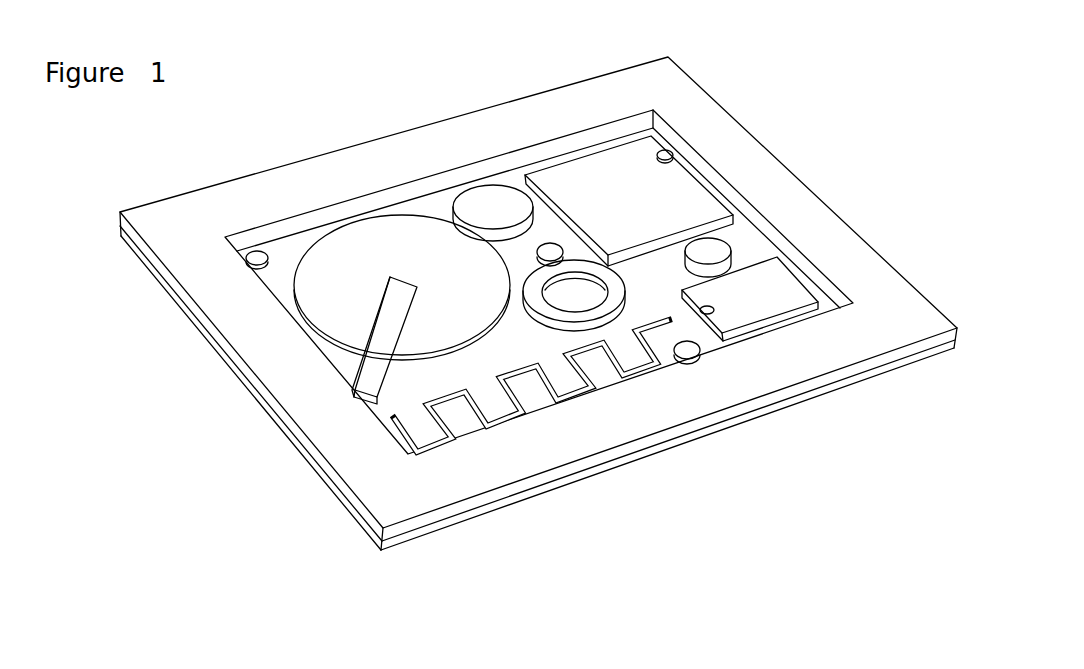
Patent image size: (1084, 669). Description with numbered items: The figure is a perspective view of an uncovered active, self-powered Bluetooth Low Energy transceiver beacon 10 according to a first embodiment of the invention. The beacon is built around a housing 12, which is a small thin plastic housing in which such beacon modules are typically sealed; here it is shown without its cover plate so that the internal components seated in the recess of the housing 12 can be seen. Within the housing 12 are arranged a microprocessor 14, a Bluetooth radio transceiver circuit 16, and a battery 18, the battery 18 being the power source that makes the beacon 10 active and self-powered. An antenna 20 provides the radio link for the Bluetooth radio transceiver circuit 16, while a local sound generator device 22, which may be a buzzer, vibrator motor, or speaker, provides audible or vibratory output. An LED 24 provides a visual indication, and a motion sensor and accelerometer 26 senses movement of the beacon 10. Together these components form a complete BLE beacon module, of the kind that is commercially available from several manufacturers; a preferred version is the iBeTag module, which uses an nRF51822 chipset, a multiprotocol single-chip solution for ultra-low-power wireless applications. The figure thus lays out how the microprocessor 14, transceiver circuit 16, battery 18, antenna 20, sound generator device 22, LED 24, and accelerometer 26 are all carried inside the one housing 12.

The active transceiver beacon 10 is at (150, 473).
The housing 12 is at (710, 127).
The microprocessor 14 is at (588, 185).
The Bluetooth radio transceiver circuit 16 is at (752, 302).
The battery 18 is at (333, 272).
The antenna 20 is at (508, 413).
The local sound generator device 22 is at (583, 305).
The LED 24 is at (713, 252).
The motion sensor and accelerometer 26 is at (478, 207).